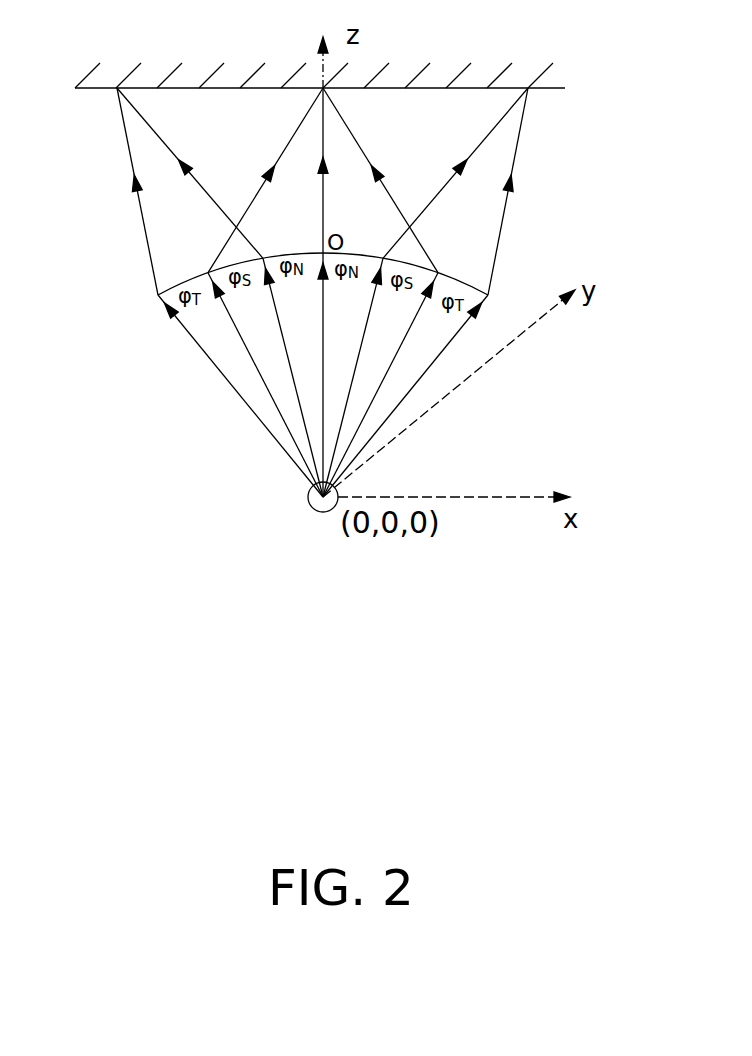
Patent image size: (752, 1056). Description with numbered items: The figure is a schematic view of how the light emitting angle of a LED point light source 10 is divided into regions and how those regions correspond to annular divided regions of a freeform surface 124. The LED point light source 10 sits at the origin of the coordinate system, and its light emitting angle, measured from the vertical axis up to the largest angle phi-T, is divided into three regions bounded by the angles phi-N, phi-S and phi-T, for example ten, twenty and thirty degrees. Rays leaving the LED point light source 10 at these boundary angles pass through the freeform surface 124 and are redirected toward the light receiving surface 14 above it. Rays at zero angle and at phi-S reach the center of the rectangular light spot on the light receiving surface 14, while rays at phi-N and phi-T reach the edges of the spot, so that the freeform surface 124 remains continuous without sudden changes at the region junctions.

The light receiving surface 14 is at (477, 88).
The freeform surface 124 is at (195, 278).
The LED point light source 10 is at (308, 495).